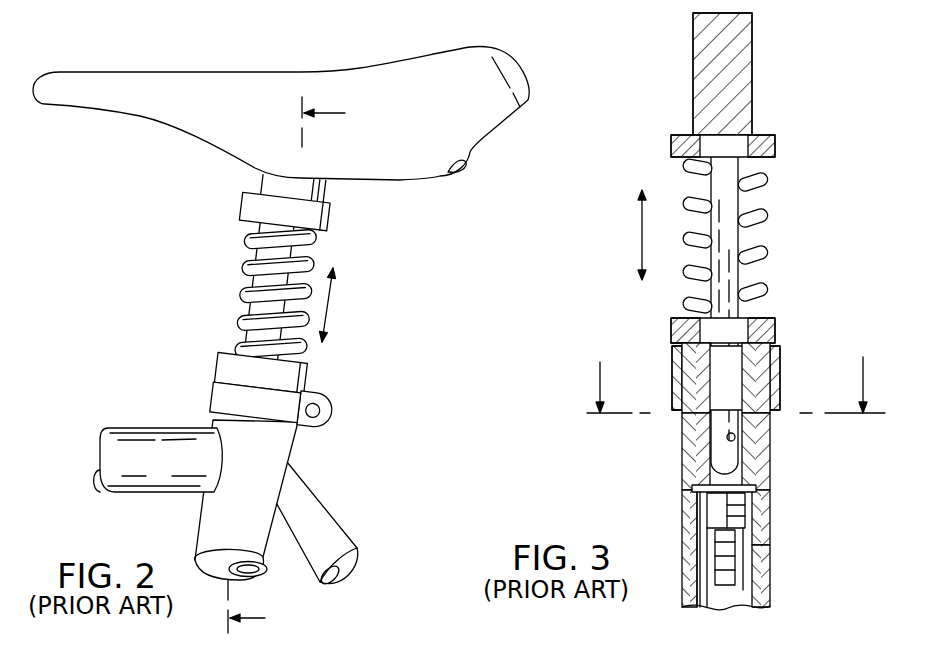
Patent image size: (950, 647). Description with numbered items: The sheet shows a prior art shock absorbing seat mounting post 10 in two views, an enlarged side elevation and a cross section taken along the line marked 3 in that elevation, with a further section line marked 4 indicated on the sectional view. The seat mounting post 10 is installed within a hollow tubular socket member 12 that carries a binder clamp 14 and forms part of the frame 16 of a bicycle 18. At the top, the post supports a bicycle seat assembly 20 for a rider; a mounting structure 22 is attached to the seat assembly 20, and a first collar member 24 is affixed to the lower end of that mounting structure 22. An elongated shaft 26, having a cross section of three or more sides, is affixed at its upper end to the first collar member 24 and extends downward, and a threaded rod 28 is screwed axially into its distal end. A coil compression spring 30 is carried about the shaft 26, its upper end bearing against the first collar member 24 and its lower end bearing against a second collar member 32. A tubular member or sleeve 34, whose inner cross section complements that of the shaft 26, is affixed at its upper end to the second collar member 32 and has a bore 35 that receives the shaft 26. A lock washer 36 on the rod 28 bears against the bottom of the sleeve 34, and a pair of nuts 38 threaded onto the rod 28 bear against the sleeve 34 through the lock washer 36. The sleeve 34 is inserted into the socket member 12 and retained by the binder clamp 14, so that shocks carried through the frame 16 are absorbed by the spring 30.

In FIG. 2, the seat mounting post 10 is at (351, 285).
In FIG. 3, the seat mounting post 10 is at (823, 80).
In FIG. 2, the hollow tubular socket member 12 is at (217, 545).
In FIG. 3, the hollow tubular socket member 12 is at (692, 532).
In FIG. 2, the binder clamp 14 is at (228, 395).
In FIG. 3, the binder clamp 14 is at (780, 377).
In FIG. 2, the frame 16 is at (143, 428).
In FIG. 3, the frame 16 is at (777, 521).
In FIG. 2, the bicycle 18 is at (190, 513).
In FIG. 3, the bicycle 18 is at (778, 563).
In FIG. 2, the bicycle seat assembly 20 is at (227, 79).
In FIG. 2, the mounting structure 22 is at (277, 187).
In FIG. 3, the mounting structure 22 is at (750, 58).
In FIG. 2, the first collar member 24 is at (257, 211).
In FIG. 3, the first collar member 24 is at (772, 147).
In FIG. 2, the elongated shaft 26 is at (247, 284).
In FIG. 3, the elongated shaft 26 is at (750, 268).
In FIG. 3, the threaded rod 28 is at (717, 573).
In FIG. 2, the coil compression spring 30 is at (243, 267).
In FIG. 3, the coil compression spring 30 is at (765, 217).
In FIG. 2, the second collar member 32 is at (217, 357).
In FIG. 3, the second collar member 32 is at (778, 323).
In FIG. 3, the tubular member or sleeve 34 is at (695, 432).
In FIG. 3, the bore 35 is at (735, 435).
In FIG. 3, the lock washer 36 is at (700, 489).
In FIG. 3, the nuts 38 is at (715, 517).
In FIG. 2, the section line 3- 3 is at (295, 366).
In FIG. 3, the section line 4- 4 is at (736, 370).